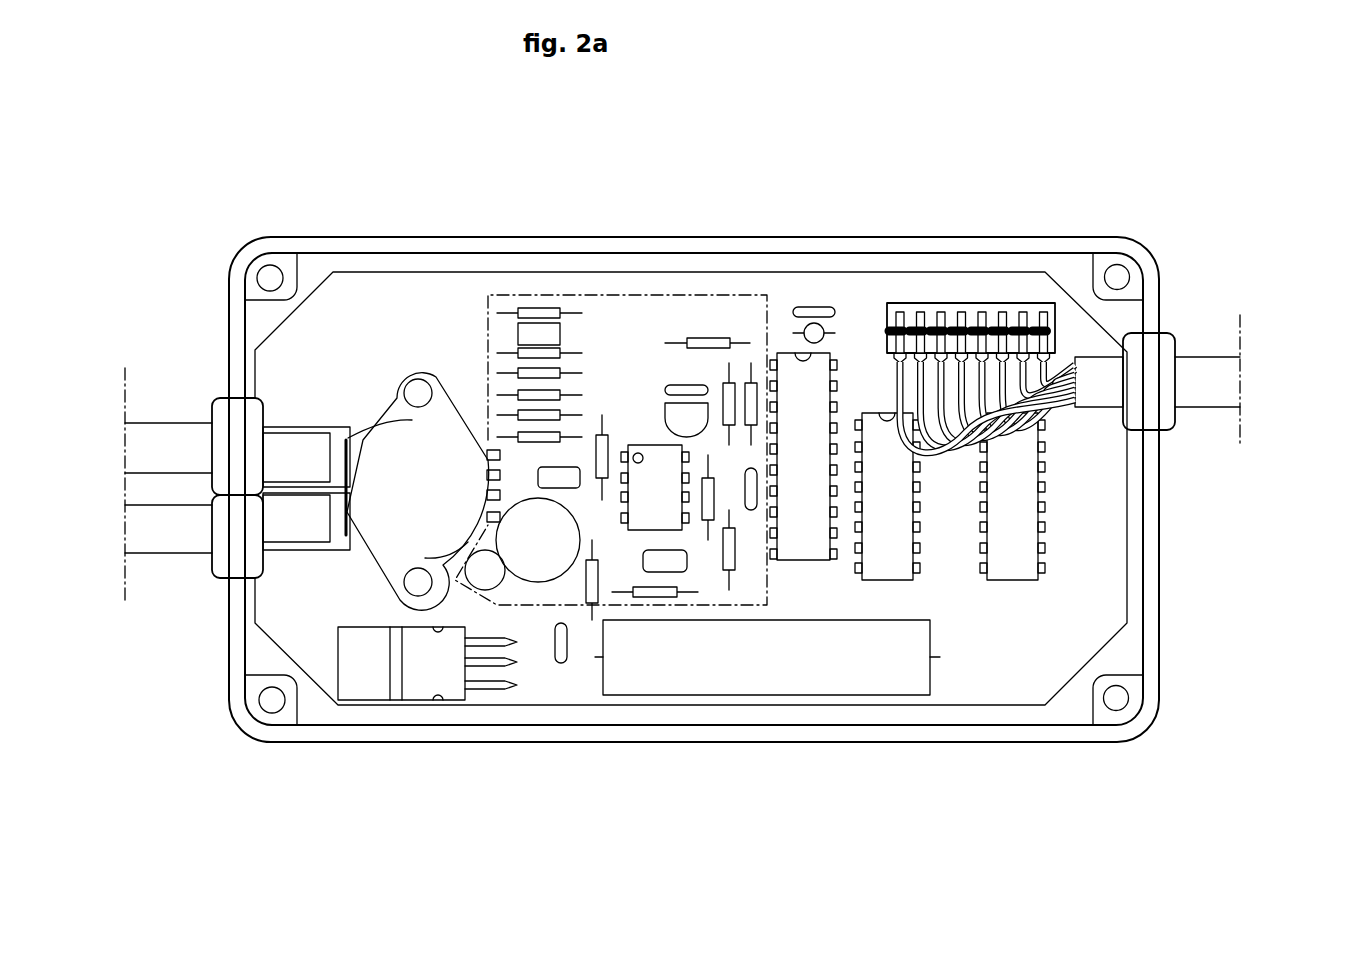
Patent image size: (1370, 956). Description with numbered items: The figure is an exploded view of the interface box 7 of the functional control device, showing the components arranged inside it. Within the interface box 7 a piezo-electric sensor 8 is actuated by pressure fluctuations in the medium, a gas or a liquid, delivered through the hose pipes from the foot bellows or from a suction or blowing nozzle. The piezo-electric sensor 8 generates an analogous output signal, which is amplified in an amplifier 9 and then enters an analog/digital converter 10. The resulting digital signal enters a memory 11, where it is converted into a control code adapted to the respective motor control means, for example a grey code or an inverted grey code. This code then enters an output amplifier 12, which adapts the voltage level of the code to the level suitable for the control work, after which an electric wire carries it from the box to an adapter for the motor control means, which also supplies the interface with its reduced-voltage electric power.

The interface box 7 is at (693, 574).
The piezo-electric sensor 8 is at (358, 366).
The amplifier 9 is at (609, 371).
The analog/digital converter 10 is at (742, 341).
The memory 11 is at (1005, 636).
The output amplifier 12 is at (1159, 636).